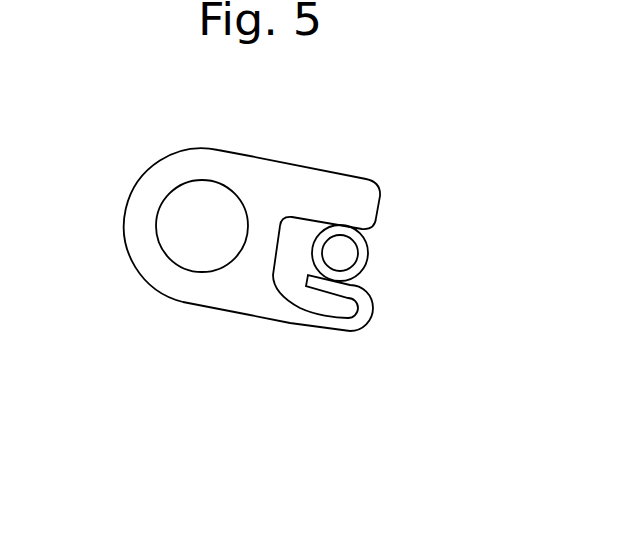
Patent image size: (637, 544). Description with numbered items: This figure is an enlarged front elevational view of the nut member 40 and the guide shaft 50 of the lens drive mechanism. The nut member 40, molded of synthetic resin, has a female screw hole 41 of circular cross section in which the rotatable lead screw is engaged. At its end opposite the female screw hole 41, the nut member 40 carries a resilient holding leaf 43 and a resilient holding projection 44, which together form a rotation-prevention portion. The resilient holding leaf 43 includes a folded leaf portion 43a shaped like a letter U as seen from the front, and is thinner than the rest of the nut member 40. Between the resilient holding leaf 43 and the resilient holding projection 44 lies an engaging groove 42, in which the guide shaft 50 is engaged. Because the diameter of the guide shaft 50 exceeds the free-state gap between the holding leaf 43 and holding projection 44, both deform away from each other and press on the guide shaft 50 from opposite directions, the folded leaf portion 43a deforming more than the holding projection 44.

The nut member 40 is at (278, 178).
The female screw hole 41 is at (198, 181).
The engaging groove 42 is at (313, 222).
The resilient holding leaf 43 is at (300, 315).
The folded leaf portion 43a is at (350, 286).
The resilient holding projection 44 is at (355, 193).
The guide shaft 50 is at (358, 241).